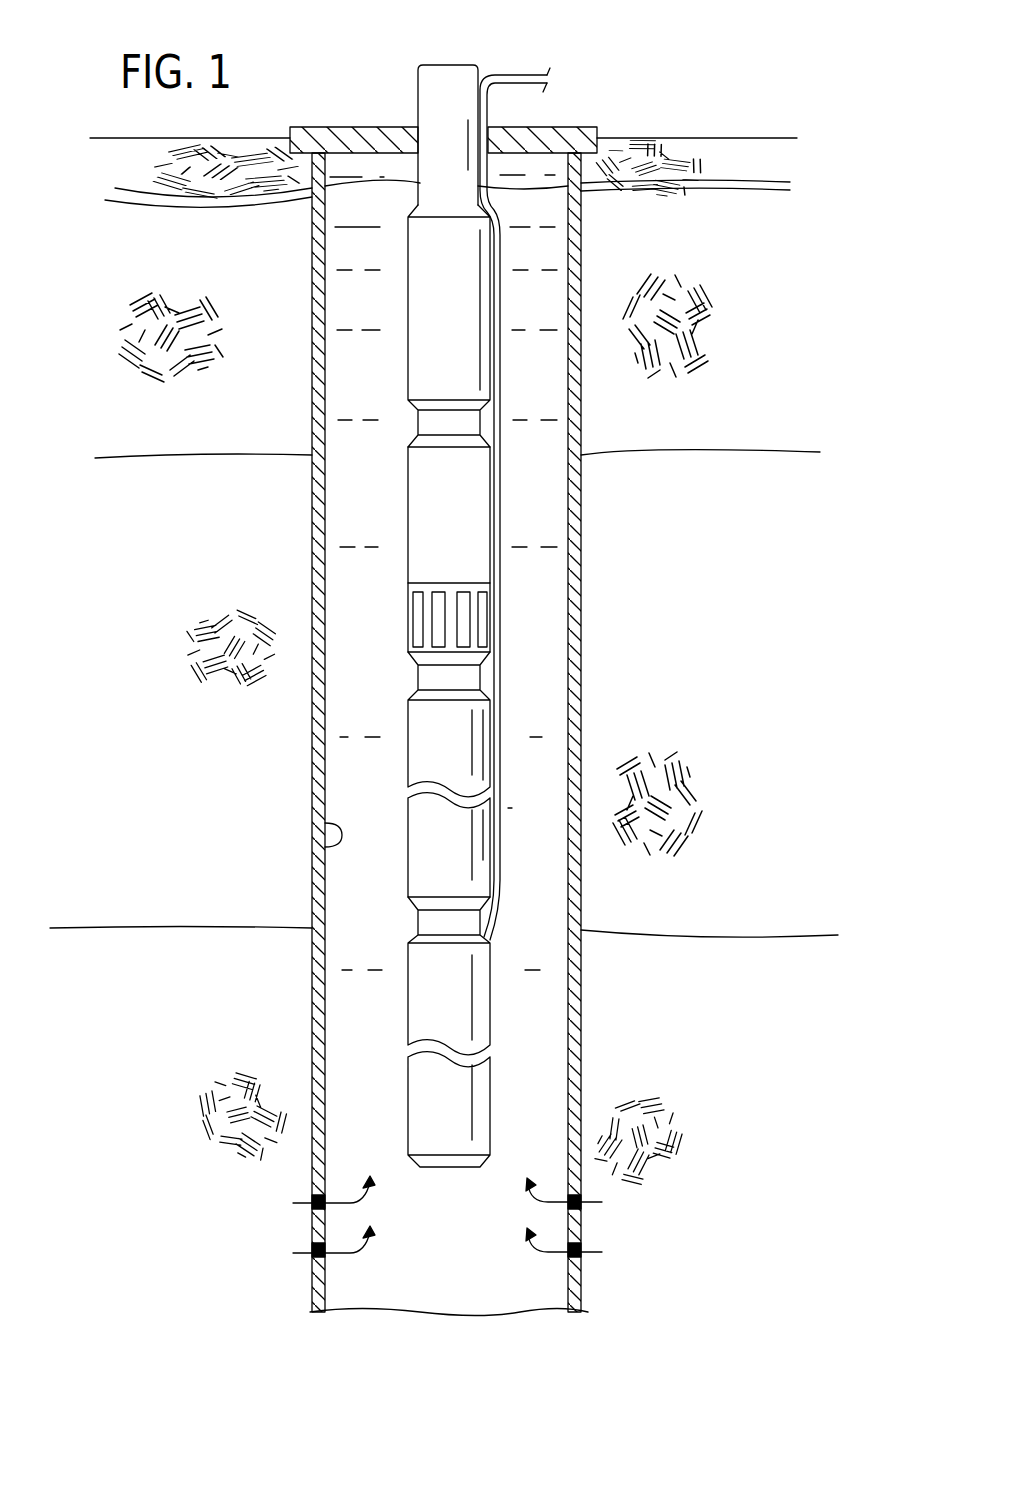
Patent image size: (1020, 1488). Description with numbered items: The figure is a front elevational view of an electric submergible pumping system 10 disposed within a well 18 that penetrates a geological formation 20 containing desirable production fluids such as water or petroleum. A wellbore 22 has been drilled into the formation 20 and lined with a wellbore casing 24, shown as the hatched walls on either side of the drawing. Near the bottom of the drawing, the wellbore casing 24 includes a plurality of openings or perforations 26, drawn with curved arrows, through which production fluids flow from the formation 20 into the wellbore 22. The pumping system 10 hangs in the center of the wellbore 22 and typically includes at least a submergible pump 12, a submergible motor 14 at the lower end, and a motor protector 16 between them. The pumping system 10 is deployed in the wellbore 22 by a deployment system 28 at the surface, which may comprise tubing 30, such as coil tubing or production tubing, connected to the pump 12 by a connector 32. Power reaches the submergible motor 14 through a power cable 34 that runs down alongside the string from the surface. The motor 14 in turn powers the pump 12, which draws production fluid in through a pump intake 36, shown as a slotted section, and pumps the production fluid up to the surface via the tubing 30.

The pumping system 10 is at (617, 418).
The submergible pump 12 is at (475, 523).
The submergible motor 14 is at (435, 1020).
The motor protector 16 is at (460, 727).
The well 18 is at (535, 945).
The geological formation 20 is at (230, 995).
The wellbore 22 is at (386, 950).
The wellbore casing 24 is at (325, 826).
The perforations 26 is at (318, 1245).
The deployment system 28 is at (398, 110).
The tubing 30 is at (448, 85).
The connector 32 is at (462, 357).
The power cable 34 is at (480, 107).
The pump intake 36 is at (468, 628).